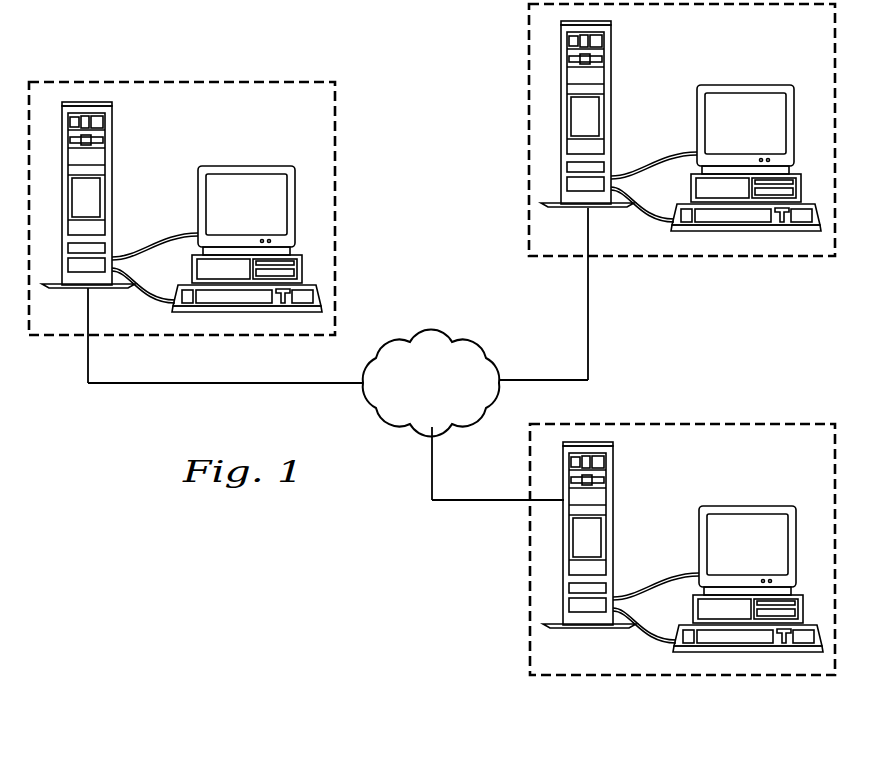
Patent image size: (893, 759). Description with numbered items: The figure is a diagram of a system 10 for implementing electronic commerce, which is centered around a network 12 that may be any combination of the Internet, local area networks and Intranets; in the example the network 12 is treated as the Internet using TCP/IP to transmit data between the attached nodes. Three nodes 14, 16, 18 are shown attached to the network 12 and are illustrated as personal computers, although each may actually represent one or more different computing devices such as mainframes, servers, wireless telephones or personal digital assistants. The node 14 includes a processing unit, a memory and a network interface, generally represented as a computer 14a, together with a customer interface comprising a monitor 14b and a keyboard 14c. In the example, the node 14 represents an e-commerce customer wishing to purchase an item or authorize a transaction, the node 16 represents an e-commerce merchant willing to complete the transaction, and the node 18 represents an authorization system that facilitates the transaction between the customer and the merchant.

The system 10 is at (241, 34).
The network 12 is at (446, 410).
The node 14 is at (335, 106).
The computer 14a is at (112, 132).
The monitor 14b is at (198, 208).
The keyboard 14c is at (175, 305).
The node 16 is at (528, 48).
The node 18 is at (530, 580).